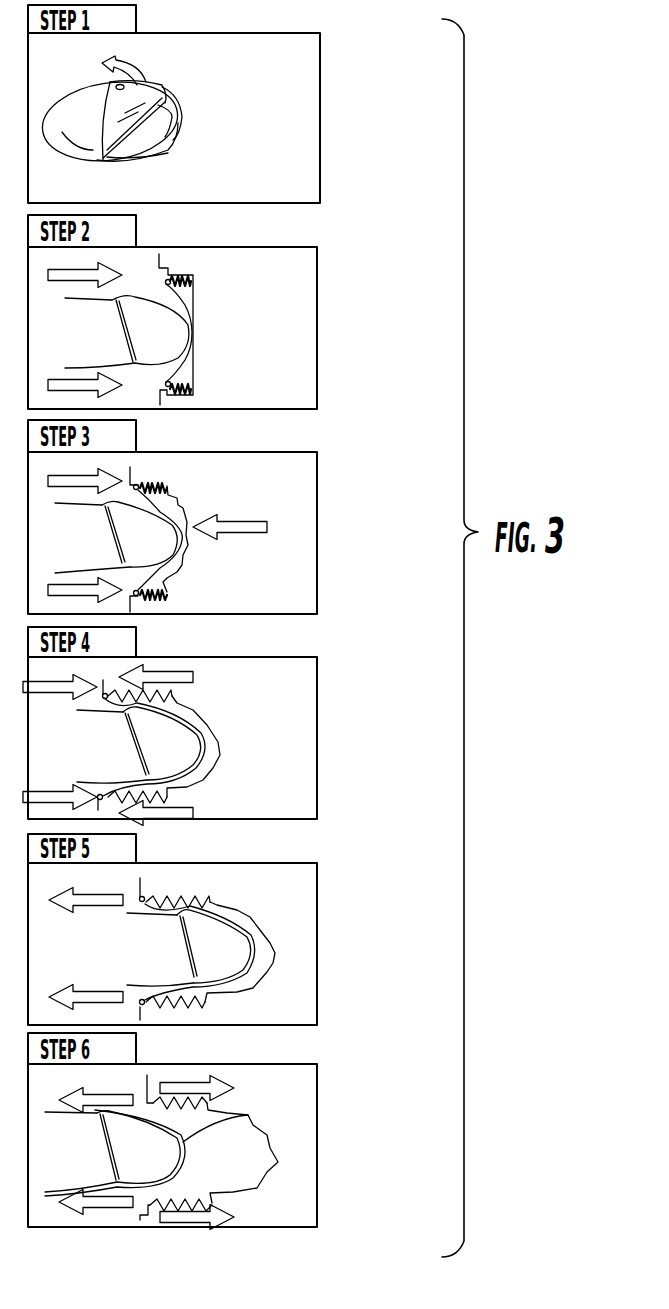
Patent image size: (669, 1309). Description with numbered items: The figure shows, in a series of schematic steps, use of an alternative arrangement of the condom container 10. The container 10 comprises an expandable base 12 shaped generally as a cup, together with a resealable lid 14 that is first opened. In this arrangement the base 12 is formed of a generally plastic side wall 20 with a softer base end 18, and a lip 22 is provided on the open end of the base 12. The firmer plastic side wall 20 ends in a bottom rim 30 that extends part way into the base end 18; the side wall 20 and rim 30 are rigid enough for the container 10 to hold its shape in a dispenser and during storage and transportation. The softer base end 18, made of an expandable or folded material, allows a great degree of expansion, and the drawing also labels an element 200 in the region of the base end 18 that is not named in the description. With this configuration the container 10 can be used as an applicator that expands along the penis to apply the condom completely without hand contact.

The condom container 10 is at (222, 118).
The expandable base 12 is at (125, 175).
The resealable lid 14 is at (148, 93).
The base end 18 is at (195, 316).
The side wall 20 is at (178, 281).
The lip 22 is at (159, 257).
The bottom rim 30 is at (178, 486).
The flexible membrane 200 is at (188, 308).